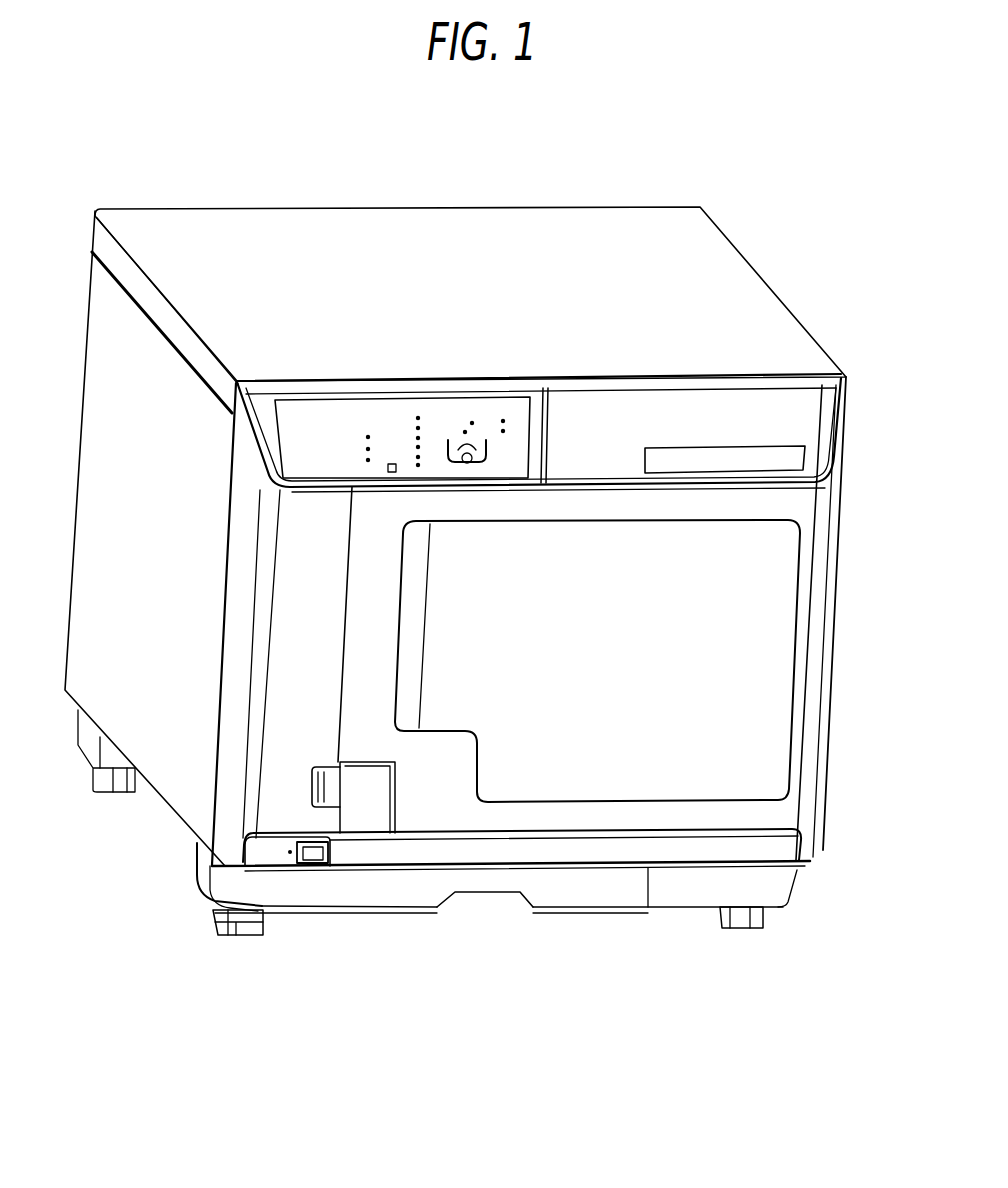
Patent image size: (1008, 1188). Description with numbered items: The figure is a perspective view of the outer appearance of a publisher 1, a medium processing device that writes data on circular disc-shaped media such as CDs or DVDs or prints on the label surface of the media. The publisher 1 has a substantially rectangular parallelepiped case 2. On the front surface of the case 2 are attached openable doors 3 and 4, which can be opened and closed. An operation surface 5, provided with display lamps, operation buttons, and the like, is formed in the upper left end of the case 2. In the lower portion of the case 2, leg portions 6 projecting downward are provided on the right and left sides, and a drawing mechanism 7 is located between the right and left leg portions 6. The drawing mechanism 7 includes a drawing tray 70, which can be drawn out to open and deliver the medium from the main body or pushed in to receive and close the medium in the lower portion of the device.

The publisher 1 is at (618, 242).
The case 2 is at (305, 242).
The openable door 3 is at (755, 611).
The openable door 4 is at (295, 698).
The operation surface 5 is at (337, 427).
The leg portions 6 is at (233, 890).
The drawing mechanism 7 is at (497, 918).
The drawing tray 70 is at (397, 887).